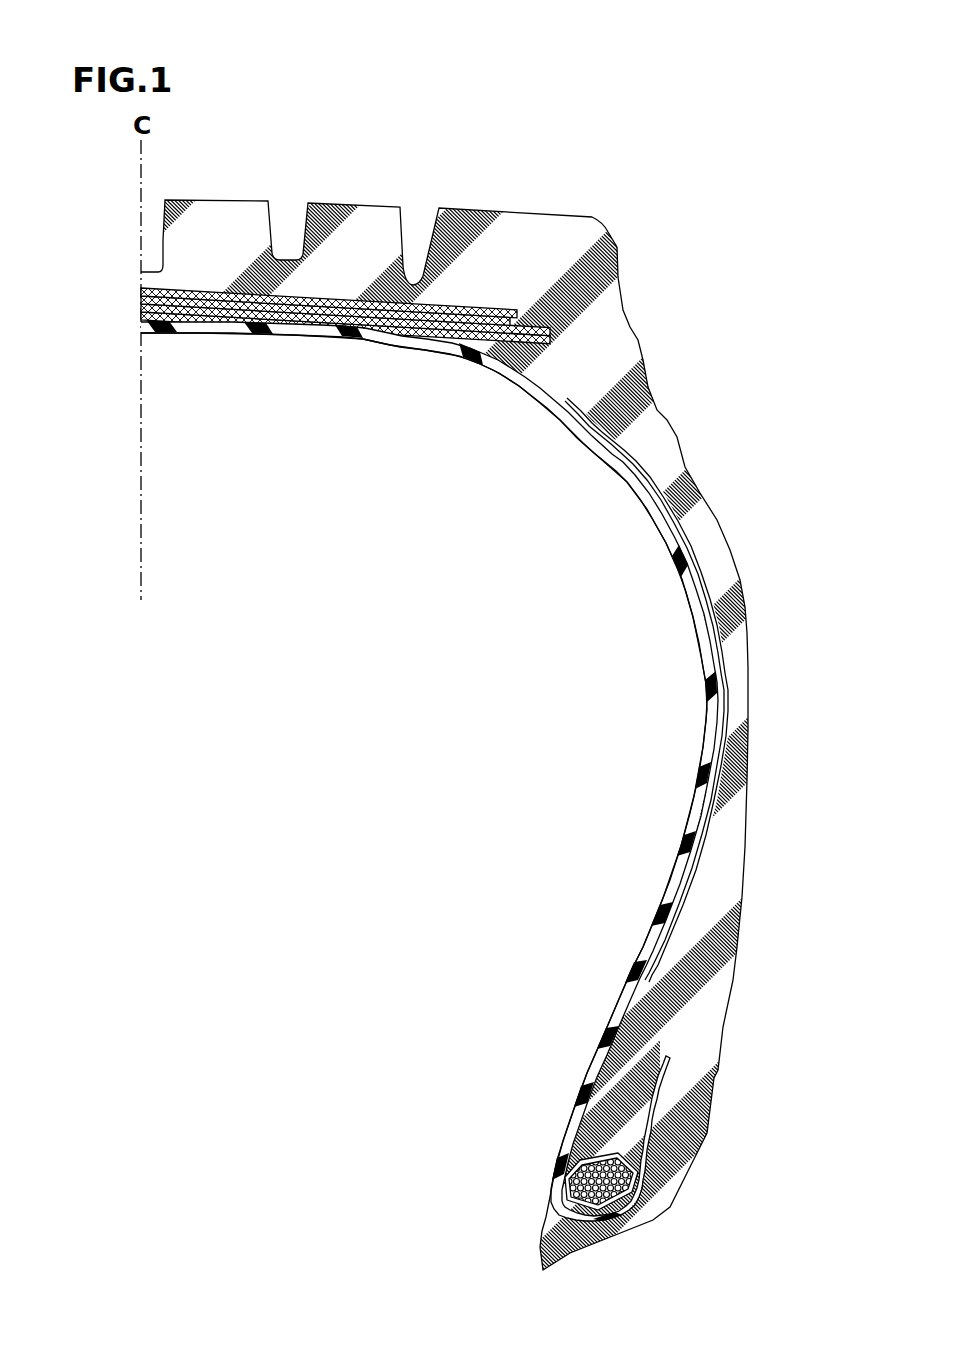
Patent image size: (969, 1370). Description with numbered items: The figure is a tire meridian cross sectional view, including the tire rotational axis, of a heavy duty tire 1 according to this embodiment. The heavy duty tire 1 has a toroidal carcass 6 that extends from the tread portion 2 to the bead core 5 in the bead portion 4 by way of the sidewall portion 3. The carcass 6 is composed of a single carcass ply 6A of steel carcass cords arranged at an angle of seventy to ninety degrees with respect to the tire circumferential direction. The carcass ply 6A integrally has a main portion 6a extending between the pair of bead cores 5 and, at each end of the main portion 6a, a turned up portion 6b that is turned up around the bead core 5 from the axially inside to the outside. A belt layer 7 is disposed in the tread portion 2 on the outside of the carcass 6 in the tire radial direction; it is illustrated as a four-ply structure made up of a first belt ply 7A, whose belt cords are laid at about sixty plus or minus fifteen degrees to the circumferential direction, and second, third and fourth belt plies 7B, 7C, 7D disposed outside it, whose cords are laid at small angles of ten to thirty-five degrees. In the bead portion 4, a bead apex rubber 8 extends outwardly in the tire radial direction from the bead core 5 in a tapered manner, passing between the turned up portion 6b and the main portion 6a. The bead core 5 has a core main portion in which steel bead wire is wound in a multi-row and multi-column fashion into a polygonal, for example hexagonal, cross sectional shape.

The heavy duty tire 1 is at (484, 685).
The tread portion 2 is at (494, 172).
The sidewall portion 3 is at (766, 516).
The bead portion 4 is at (747, 1052).
The bead core 5 is at (652, 1187).
The carcass 6 is at (430, 771).
The carcass ply 6A is at (430, 771).
The main portion 6a is at (717, 750).
The turned up portion 6b is at (720, 972).
The belt layer 7 is at (484, 685).
The first belt ply 7A is at (143, 320).
The second belt ply 7B is at (143, 307).
The third belt ply 7C is at (143, 295).
The fourth belt ply 7D is at (80, 363).
The bead apex rubber 8 is at (620, 1107).